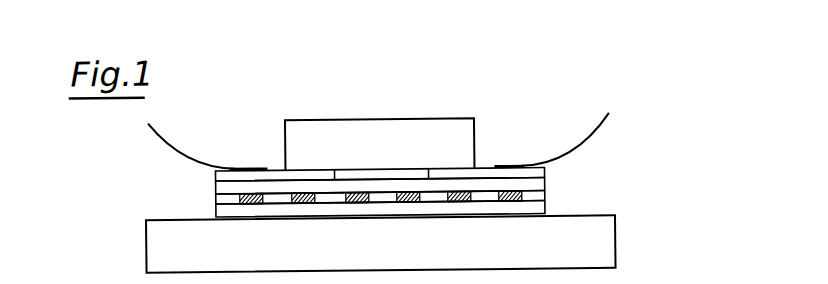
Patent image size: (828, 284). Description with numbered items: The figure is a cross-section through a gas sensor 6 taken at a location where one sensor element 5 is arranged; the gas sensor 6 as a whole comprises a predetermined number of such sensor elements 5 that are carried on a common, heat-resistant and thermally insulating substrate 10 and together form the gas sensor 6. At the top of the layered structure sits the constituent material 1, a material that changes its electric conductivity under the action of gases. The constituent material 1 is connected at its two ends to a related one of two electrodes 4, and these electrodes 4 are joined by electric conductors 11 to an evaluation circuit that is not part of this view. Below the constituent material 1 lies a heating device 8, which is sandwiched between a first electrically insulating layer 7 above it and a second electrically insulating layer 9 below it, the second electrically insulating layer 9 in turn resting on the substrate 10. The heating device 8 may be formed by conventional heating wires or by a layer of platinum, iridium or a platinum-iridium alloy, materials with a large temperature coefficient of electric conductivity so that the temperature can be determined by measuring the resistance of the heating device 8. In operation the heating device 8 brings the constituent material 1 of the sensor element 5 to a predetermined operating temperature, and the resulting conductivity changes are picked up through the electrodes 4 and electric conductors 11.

The constituent material 1 is at (430, 135).
The electrodes 4 is at (225, 176).
The sensor element 5 is at (683, 202).
The gas sensor 6 is at (270, 83).
The first electrically insulating layer 7 is at (545, 188).
The heating device 8 is at (228, 200).
The second electrically insulating layer 9 is at (537, 212).
The substrate 10 is at (172, 250).
The electric conductors 11 is at (379, 132).